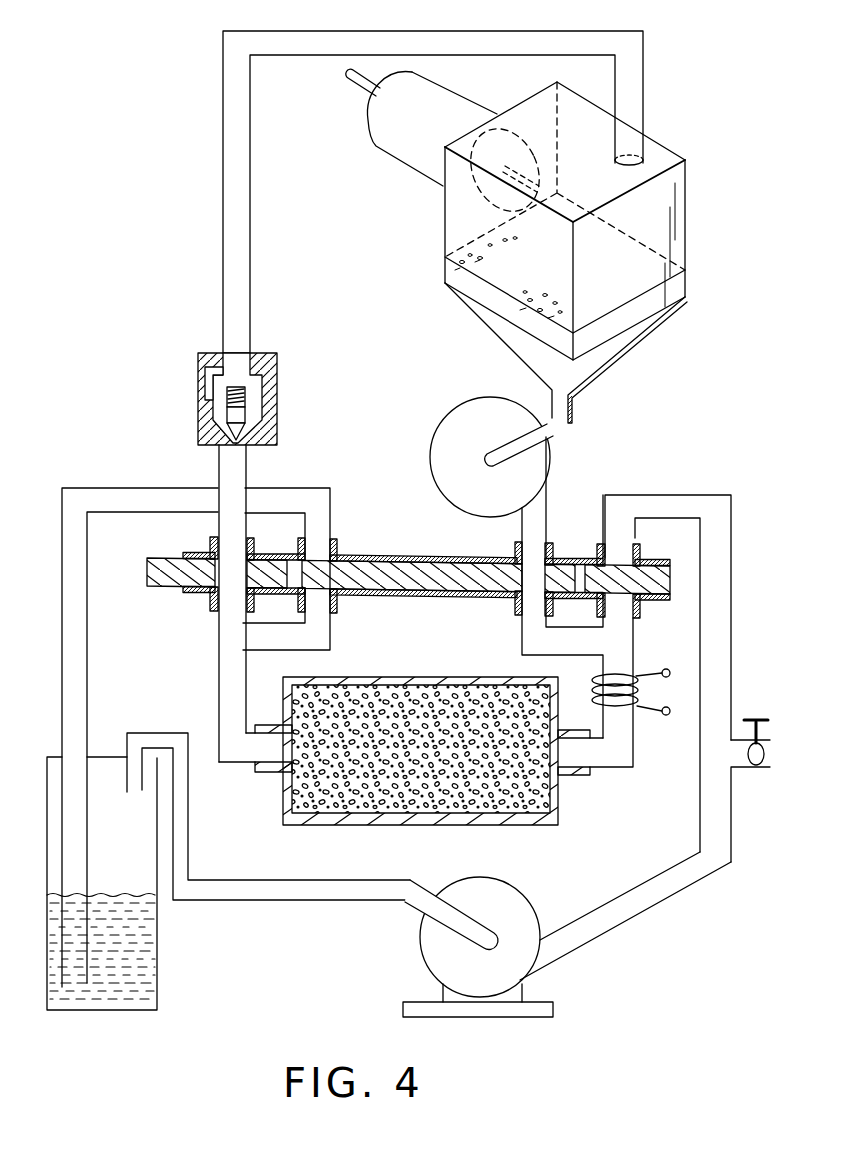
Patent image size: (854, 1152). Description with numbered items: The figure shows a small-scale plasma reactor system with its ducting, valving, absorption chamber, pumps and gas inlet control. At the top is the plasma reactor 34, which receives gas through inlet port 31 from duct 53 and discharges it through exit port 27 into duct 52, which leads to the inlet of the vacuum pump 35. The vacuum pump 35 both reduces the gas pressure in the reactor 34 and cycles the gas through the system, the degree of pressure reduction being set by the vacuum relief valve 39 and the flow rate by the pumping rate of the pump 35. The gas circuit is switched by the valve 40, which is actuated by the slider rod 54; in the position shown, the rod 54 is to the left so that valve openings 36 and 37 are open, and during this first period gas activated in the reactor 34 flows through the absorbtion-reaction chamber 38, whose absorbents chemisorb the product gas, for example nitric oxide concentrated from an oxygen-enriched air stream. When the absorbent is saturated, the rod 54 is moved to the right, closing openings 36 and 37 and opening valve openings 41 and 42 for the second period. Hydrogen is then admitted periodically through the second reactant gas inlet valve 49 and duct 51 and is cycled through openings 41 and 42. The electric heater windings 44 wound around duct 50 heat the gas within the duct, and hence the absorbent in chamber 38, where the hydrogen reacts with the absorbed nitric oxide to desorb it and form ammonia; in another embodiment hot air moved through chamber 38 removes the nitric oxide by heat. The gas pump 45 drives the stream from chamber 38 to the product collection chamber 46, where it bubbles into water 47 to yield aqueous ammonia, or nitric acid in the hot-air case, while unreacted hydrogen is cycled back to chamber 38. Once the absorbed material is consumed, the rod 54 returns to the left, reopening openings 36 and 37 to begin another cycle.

The exit port 27 is at (575, 411).
The inlet port 31 is at (643, 128).
The plasma reactor 34 is at (685, 232).
The vacuum pump 35 is at (547, 478).
The valve opening 36 is at (217, 541).
The valve opening 37 is at (530, 548).
The absorbtion-reaction chamber 38 is at (475, 678).
The vacuum relief valve 39 is at (279, 403).
The valve 40 is at (430, 554).
The valve opening 41 is at (321, 542).
The valve opening 42 is at (633, 549).
The electric heater windings 44 is at (638, 673).
The gas pump 45 is at (525, 898).
The product collection chamber 46 is at (157, 1000).
The water 47 is at (143, 972).
The second reactant gas inlet valve 49 is at (760, 768).
The duct 50 is at (630, 754).
The duct 51 is at (740, 738).
The duct 52 is at (551, 433).
The duct 53 is at (497, 32).
The slider rod 54 is at (148, 565).